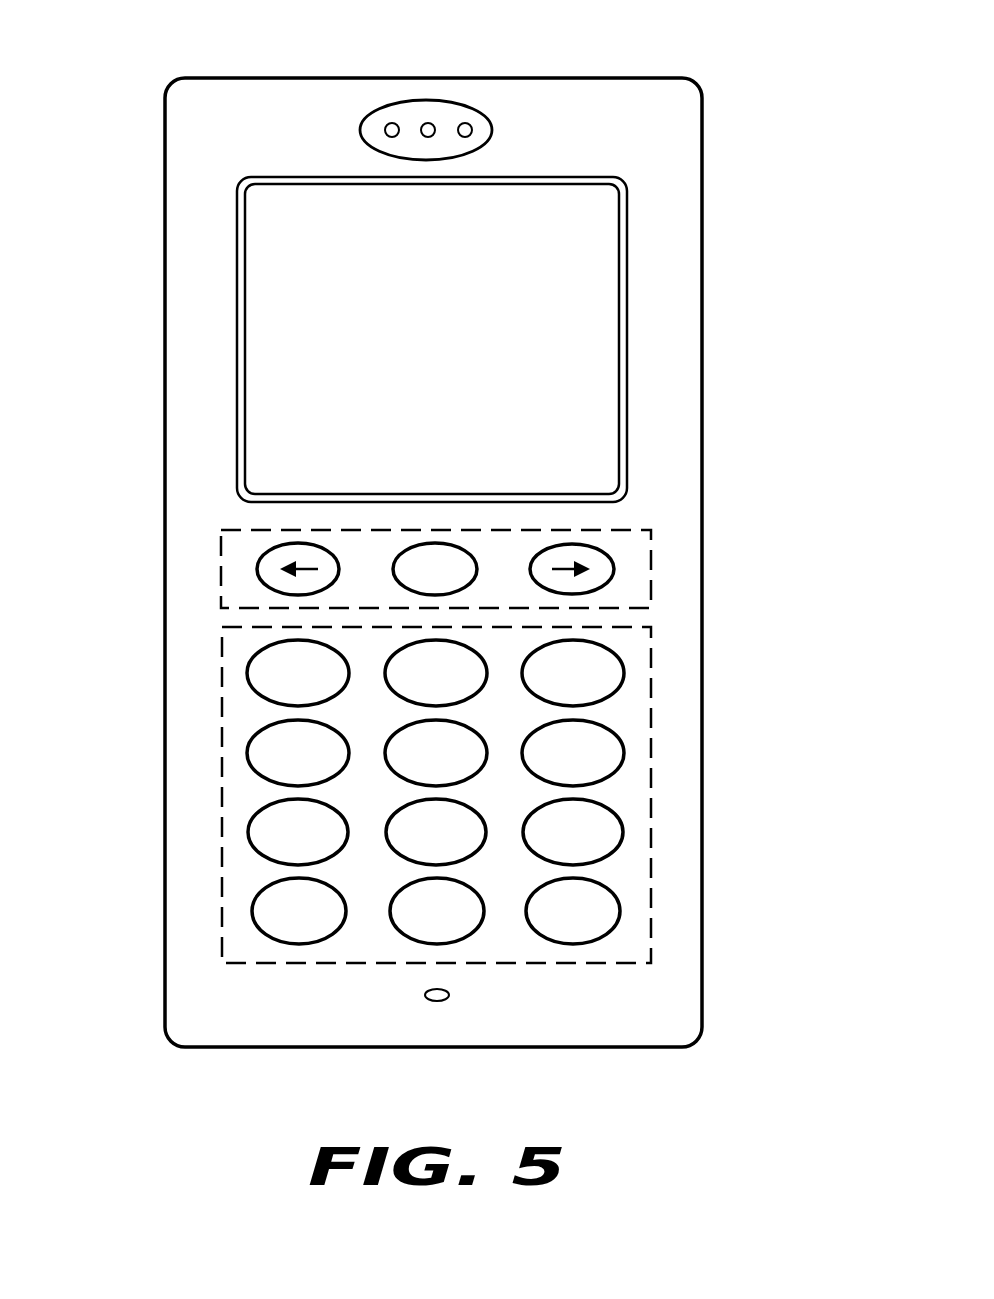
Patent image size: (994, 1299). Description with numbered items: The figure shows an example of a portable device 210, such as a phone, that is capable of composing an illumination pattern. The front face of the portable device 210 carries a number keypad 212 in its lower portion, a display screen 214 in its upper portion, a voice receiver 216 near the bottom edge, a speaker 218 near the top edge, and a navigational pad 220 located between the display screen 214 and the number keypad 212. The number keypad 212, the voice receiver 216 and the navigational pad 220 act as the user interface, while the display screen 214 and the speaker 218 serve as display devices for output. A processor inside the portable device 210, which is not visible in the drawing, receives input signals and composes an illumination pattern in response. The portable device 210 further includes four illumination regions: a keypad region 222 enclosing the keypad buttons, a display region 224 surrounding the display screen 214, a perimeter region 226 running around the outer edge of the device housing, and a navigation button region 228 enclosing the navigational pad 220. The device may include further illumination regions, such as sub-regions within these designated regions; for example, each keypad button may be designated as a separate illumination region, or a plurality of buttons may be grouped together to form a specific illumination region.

The portable device 210 is at (808, 98).
The number keypad 212 is at (145, 620).
The display screen 214 is at (560, 183).
The voice receiver 216 is at (450, 995).
The speaker 218 is at (486, 117).
The navigational pad 220 is at (143, 530).
The keypad region 222 is at (348, 966).
The display region 224 is at (288, 176).
The perimeter region 226 is at (665, 78).
The navigation button region 228 is at (590, 530).